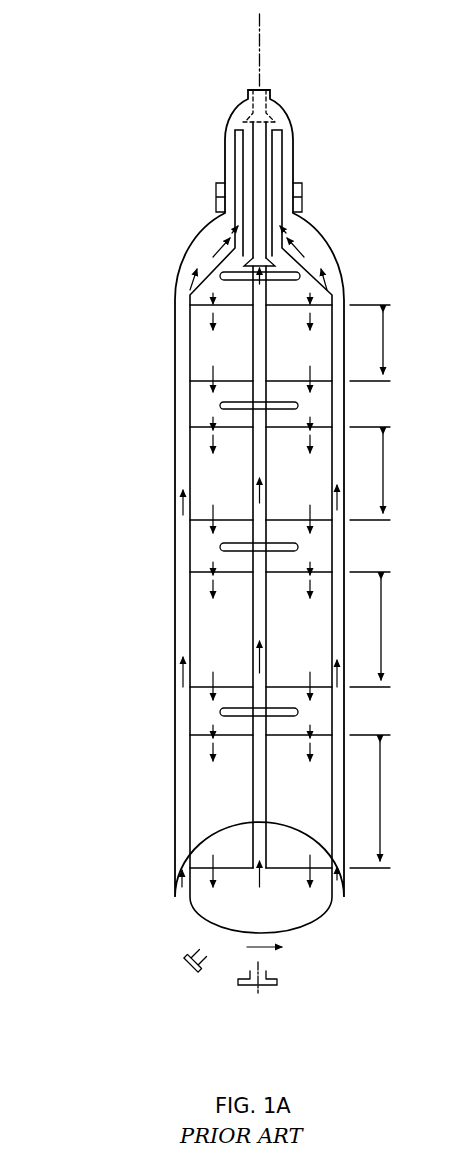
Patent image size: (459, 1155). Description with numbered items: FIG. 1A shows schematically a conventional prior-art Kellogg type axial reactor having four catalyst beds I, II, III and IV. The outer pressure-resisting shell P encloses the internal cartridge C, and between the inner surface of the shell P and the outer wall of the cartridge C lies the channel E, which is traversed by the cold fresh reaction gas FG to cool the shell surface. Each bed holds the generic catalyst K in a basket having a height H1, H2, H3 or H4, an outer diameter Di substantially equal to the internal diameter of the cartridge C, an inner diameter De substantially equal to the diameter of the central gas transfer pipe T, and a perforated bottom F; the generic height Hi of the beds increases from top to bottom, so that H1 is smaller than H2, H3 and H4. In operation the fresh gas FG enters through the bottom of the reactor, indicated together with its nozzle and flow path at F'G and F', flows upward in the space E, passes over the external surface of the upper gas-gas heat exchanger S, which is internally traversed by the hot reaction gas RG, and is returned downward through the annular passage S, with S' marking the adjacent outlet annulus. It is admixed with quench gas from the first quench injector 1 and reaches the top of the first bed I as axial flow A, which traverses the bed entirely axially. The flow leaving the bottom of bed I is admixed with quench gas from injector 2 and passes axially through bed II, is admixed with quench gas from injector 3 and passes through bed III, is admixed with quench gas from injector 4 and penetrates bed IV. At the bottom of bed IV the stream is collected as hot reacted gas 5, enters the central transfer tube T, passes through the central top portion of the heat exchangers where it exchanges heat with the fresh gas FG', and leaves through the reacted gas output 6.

The quench injector 1 is at (293, 268).
The quench injector 2 is at (298, 406).
The quench injector 3 is at (298, 547).
The quench injector 4 is at (298, 712).
The hot reacted gas 5 is at (303, 885).
The reacted gas output 6 is at (261, 44).
The outer pressure-resisting shell P is at (175, 710).
The internal cartridge C is at (187, 735).
The central gas transfer pipe T is at (255, 795).
The catalyst K is at (208, 351).
The channel E is at (182, 618).
The hot reaction gas RG is at (253, 493).
The perforated bottom F is at (228, 690).
The feed flow F' is at (292, 932).
The feed gas nozzle F'G is at (180, 964).
The fresh reaction gas FG is at (258, 601).
The fresh gas FG' is at (230, 182).
The indirect heat exchanger S is at (313, 164).
The product outlet annulus S' is at (202, 129).
The axial flow A is at (312, 298).
The outer diameter Di is at (203, 382).
The inner diameter De is at (252, 382).
The height H1 is at (370, 343).
The height H2 is at (370, 473).
The height H3 is at (370, 629).
The height H4 is at (370, 801).
The height Hi is at (383, 372).
The first catalyst bed I is at (312, 342).
The second catalyst bed II is at (305, 463).
The third catalyst bed III is at (305, 608).
The fourth catalyst bed IV is at (310, 772).